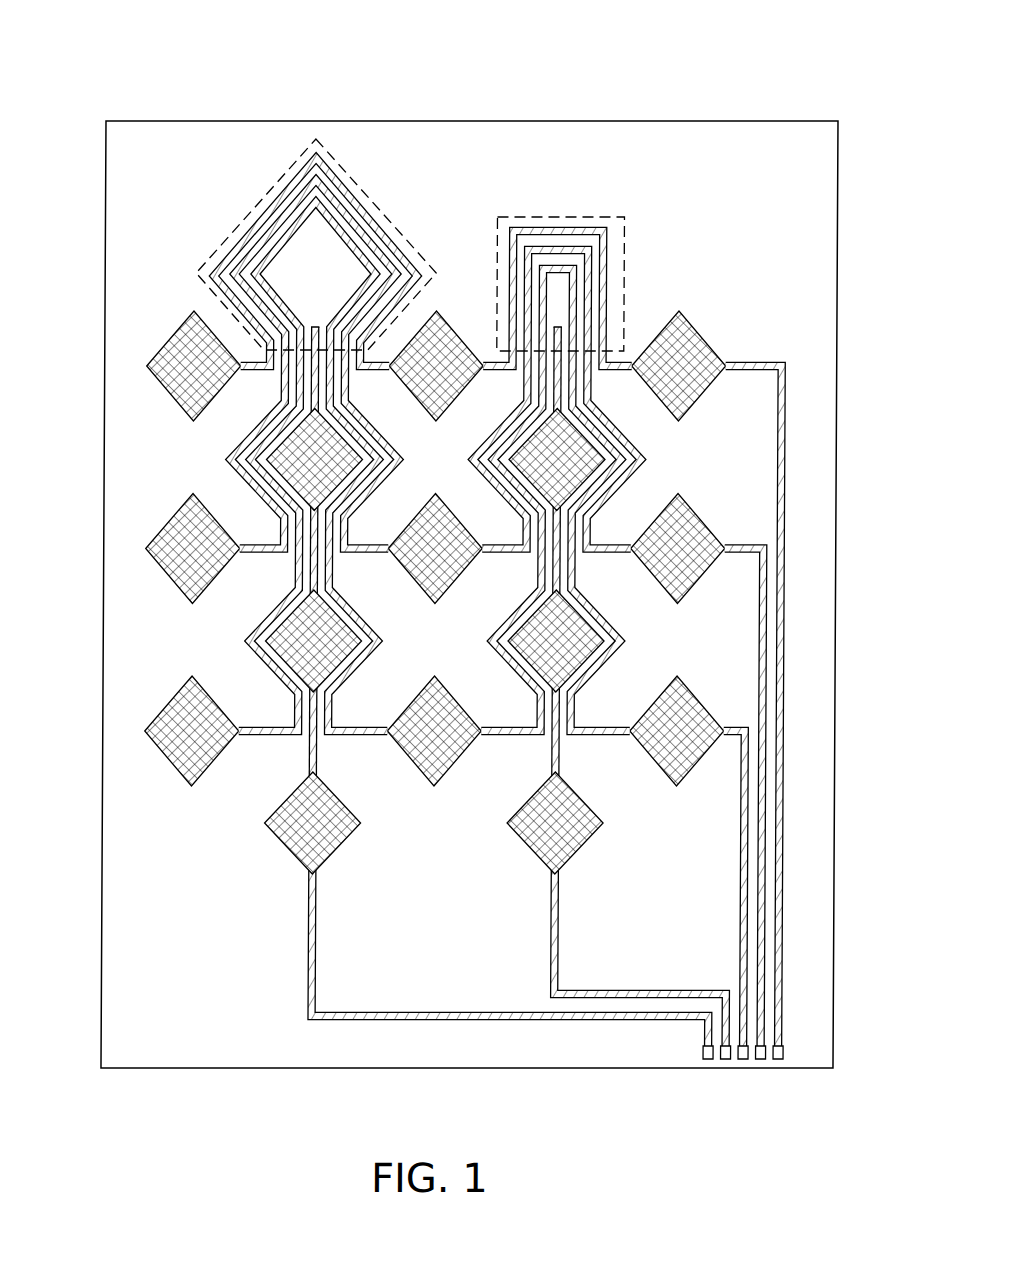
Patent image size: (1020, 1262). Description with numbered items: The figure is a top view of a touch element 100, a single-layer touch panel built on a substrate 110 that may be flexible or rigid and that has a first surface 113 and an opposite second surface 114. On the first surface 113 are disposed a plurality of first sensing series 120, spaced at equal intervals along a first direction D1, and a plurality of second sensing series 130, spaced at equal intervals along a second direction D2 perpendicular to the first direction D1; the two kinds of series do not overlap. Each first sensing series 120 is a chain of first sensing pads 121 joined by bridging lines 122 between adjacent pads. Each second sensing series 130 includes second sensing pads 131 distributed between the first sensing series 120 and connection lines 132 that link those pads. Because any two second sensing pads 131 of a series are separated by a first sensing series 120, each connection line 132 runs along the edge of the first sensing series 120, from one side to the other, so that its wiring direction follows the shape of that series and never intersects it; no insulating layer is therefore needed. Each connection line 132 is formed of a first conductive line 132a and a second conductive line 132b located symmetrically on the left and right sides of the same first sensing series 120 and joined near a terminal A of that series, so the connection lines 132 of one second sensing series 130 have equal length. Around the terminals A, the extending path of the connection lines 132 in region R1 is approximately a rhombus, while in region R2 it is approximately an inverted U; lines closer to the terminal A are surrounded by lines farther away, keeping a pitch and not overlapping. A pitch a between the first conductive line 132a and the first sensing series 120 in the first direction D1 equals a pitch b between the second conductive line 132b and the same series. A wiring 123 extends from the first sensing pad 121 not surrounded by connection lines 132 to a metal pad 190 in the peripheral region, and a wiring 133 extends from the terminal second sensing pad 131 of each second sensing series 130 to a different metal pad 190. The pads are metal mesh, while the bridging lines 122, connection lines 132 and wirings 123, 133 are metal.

The touch element 100 is at (812, 1129).
The substrate 110 is at (143, 152).
The first surface 113 is at (167, 955).
The second surface 114 is at (167, 1002).
The first sensing series 120 is at (448, 686).
The first sensing pad 121 is at (275, 448).
The bridging line 122 is at (308, 750).
The wiring 123 is at (316, 903).
The second sensing series 130 is at (399, 402).
The second sensing pad 131 is at (172, 387).
The connection line 132 is at (428, 374).
The first conductive line 132a is at (366, 214).
The second conductive line 132b is at (268, 195).
The wiring 133 is at (780, 868).
The metal pad 190 is at (727, 1060).
The region R1 is at (405, 228).
The region R2 is at (625, 282).
The terminal A is at (316, 322).
The first direction D1 is at (285, 78).
The second direction D2 is at (72, 160).
The pitch a is at (254, 483).
The pitch b is at (362, 483).